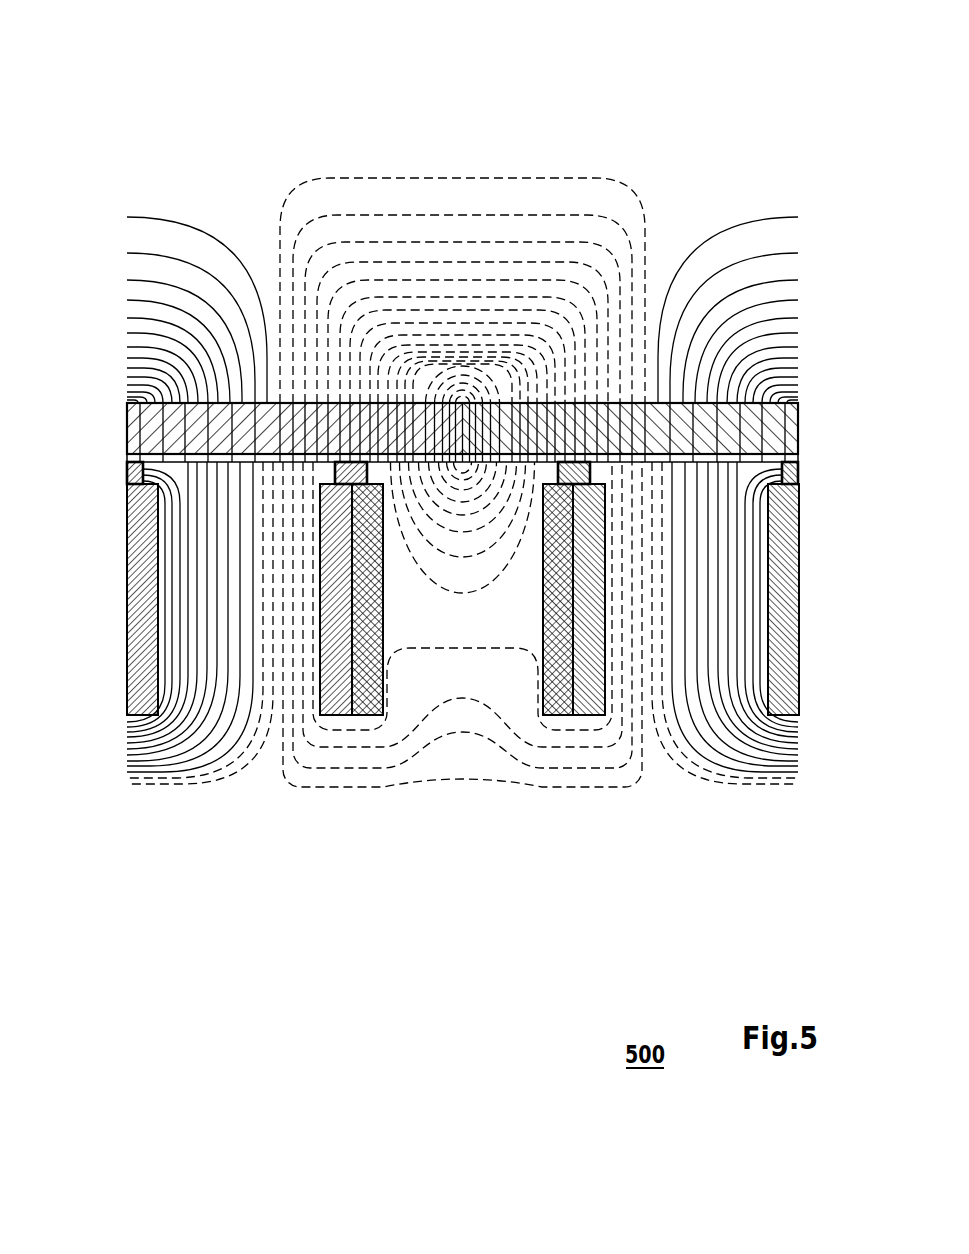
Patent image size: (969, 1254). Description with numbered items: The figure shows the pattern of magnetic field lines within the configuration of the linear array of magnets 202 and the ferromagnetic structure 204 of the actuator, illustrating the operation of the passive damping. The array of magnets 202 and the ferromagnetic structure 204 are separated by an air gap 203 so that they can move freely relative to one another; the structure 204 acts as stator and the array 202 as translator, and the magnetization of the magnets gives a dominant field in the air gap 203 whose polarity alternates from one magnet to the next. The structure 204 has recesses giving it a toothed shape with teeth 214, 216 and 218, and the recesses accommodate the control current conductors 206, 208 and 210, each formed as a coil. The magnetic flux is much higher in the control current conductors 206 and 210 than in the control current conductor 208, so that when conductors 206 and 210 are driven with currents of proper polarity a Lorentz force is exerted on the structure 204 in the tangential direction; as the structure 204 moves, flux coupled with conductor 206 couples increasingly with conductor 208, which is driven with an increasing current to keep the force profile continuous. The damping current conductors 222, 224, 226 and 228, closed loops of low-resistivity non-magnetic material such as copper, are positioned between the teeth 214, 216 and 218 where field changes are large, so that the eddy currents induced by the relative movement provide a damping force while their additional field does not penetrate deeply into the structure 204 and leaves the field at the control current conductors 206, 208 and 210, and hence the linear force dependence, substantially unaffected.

The linear array of magnets 202 is at (120, 172).
The air gap 203 is at (470, 462).
The ferromagnetic structure 204 is at (462, 628).
The control current conductor 206 is at (333, 683).
The control current conductor 208 is at (563, 683).
The control current conductor 210 is at (793, 683).
The tooth 214 is at (197, 487).
The tooth 216 is at (413, 490).
The tooth 218 is at (640, 483).
The damping current conductor 222 is at (140, 458).
The damping current conductor 224 is at (350, 462).
The damping current conductor 226 is at (578, 463).
The damping current conductor 228 is at (800, 458).